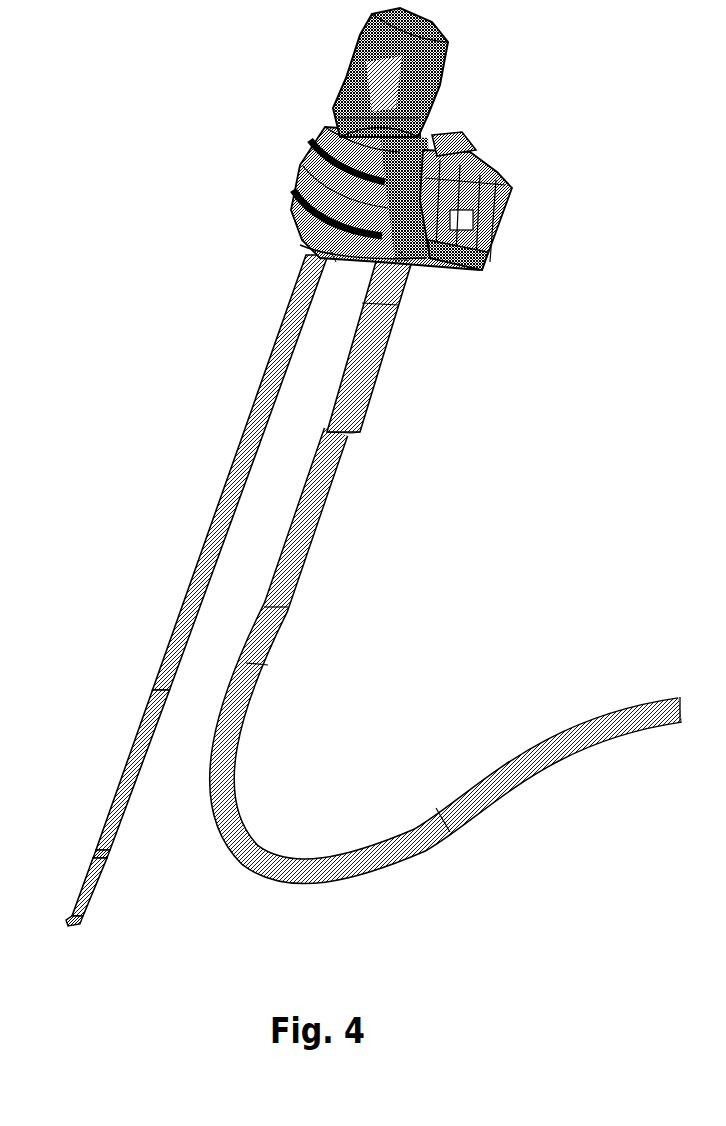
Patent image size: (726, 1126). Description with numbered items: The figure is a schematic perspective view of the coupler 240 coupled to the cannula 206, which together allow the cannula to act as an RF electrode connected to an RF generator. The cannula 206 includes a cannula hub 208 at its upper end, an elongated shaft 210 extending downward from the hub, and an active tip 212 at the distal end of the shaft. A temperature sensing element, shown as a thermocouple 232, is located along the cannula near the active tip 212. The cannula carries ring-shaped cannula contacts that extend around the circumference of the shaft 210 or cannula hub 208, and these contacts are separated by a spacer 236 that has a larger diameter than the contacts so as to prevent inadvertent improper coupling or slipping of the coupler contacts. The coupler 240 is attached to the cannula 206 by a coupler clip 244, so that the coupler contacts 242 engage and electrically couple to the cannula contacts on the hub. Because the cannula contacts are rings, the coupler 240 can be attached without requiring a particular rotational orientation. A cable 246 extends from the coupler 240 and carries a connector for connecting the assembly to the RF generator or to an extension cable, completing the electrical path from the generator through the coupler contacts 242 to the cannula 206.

The cannula 206 is at (280, 353).
The cannula hub 208 is at (330, 122).
The shaft 210 is at (132, 793).
The active tip 212 is at (75, 920).
The thermocouple 232 is at (100, 852).
The spacer 236 is at (303, 175).
The coupler 240 is at (508, 188).
The coupler contacts 242 is at (313, 157).
The coupler clip 244 is at (478, 267).
The cable 246 is at (360, 420).